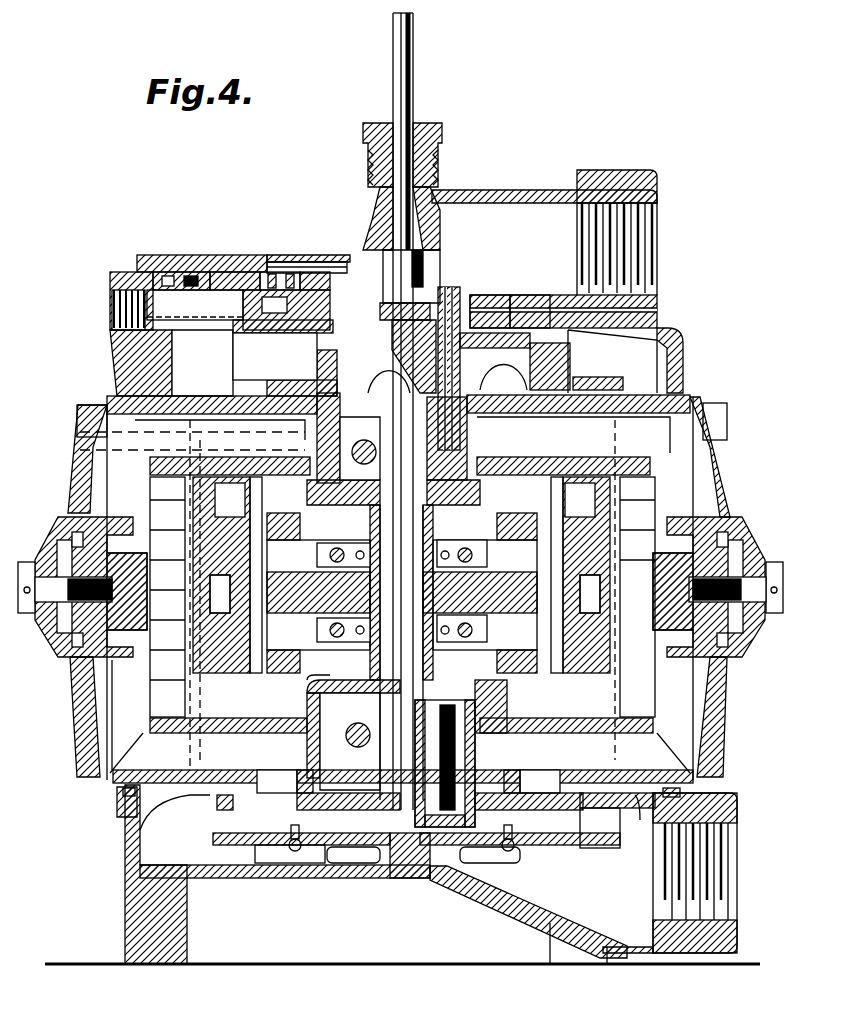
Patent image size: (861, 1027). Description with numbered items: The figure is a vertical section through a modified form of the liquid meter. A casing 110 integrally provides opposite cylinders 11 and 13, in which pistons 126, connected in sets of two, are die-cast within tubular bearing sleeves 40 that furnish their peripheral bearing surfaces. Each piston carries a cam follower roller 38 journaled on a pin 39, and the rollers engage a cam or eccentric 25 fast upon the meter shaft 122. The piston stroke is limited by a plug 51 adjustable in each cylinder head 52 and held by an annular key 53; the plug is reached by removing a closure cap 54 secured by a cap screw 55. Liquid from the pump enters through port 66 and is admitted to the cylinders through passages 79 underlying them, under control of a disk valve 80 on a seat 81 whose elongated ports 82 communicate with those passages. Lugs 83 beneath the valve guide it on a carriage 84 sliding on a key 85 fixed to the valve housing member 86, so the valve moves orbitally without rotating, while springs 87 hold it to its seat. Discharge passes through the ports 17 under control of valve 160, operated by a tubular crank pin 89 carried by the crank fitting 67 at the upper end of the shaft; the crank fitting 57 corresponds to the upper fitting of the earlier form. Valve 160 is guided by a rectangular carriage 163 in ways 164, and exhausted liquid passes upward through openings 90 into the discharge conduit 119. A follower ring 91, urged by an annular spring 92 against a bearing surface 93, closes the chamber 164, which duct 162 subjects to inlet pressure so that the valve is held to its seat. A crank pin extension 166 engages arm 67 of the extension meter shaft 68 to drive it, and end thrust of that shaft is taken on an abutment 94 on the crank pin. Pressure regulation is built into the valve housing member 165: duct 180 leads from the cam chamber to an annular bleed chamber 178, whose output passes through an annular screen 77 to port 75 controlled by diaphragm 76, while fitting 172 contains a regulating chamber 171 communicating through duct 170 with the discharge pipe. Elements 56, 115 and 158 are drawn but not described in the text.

The cylinder 11 is at (178, 665).
The cylinder 13 is at (628, 732).
The port 17 is at (505, 405).
The cam or eccentric 25 is at (478, 595).
The cam follower roller 38 is at (210, 598).
The pin 39 is at (253, 530).
The tubular bearing sleeve 40 is at (165, 478).
The plug 51 is at (150, 580).
The cylinder head 52 is at (78, 480).
The annular key 53 is at (82, 540).
The closure cap 54 is at (55, 530).
The cap screw 55 is at (28, 615).
The flange 56 is at (100, 785).
The crank fitting 57 is at (365, 438).
The port 66 is at (715, 910).
The crank fitting 67 is at (427, 297).
The extension meter shaft 68 is at (416, 108).
The port 75 is at (232, 272).
The diaphragm 76 is at (215, 272).
The annular screen 77 is at (181, 272).
The transfer passage 79 is at (190, 815).
The disk valve 80 is at (578, 825).
The seat 81 is at (240, 810).
The port 82 is at (272, 780).
The lug 83 is at (310, 832).
The carriage 84 is at (240, 850).
The key 85 is at (388, 878).
The valve housing member 86 is at (292, 878).
The spring 87 is at (262, 862).
The tubular crank pin 89 is at (450, 338).
The opening 90 is at (392, 360).
The follower ring 91 is at (556, 300).
The annular spring 92 is at (522, 300).
The bearing surface 93 is at (486, 300).
The abutment 94 is at (400, 318).
The casing 110 is at (125, 825).
The main plate 115 is at (200, 420).
The discharge conduit 119 is at (548, 205).
The meter shaft 122 is at (375, 690).
The piston 126 is at (208, 634).
The lower bearing 158 is at (478, 745).
The valve 160 is at (588, 386).
The duct 162 is at (78, 450).
The rectangular carriage 163 is at (325, 370).
The ways 164 is at (240, 372).
The valve housing member 165 is at (130, 340).
The crank pin extension 166 is at (440, 297).
The duct 170 is at (330, 258).
The regulating chamber 171 is at (290, 280).
The fitting 172 is at (126, 258).
The annular bleed chamber 178 is at (262, 288).
The duct 180 is at (78, 432).